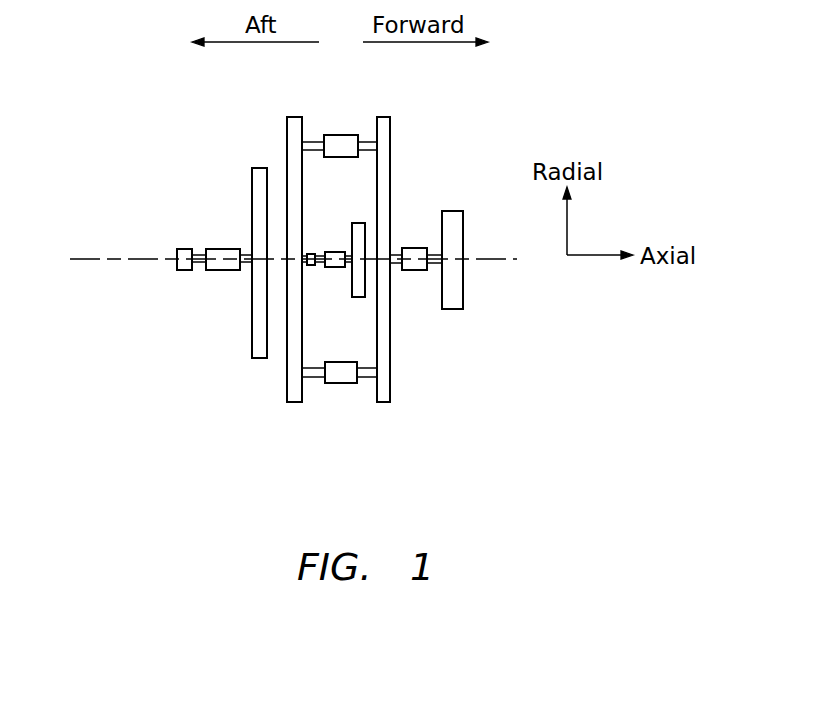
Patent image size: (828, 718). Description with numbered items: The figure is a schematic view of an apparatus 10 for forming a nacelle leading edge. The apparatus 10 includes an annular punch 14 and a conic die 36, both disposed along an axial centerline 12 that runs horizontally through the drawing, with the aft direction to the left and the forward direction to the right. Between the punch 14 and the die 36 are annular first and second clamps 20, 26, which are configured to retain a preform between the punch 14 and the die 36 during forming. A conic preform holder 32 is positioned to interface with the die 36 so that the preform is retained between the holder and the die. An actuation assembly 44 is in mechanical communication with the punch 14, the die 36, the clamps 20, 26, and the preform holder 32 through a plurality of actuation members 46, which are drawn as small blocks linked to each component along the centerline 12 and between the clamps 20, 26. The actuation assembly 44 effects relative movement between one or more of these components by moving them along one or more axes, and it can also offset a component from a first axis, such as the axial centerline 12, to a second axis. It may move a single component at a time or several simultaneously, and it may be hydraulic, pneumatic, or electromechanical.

The apparatus 10 is at (487, 120).
The axial centerline 12 is at (80, 258).
The annular punch 14 is at (258, 358).
The first clamp 20 is at (293, 402).
The second clamp 26 is at (383, 402).
The conic preform holder 32 is at (358, 238).
The conic die 36 is at (463, 288).
The actuation assembly 44 is at (197, 336).
The actuation members 46 is at (222, 248).